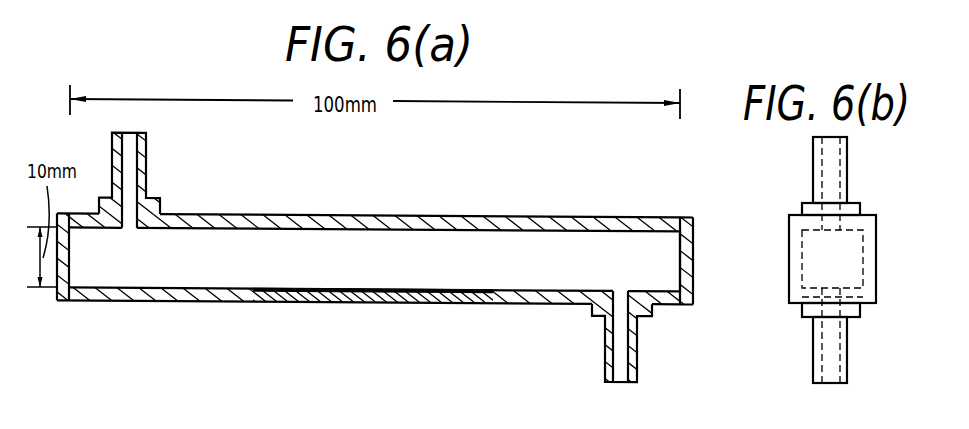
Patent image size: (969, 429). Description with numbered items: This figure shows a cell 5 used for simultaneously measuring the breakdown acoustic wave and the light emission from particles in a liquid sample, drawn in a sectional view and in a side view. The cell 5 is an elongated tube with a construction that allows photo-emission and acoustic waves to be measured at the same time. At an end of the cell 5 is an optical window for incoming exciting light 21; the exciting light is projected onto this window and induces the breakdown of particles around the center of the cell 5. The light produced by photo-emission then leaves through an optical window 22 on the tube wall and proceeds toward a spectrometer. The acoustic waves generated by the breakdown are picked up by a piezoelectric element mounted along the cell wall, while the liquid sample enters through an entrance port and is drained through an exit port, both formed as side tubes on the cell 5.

The cell 5 is at (484, 263).
The optical window for incoming exciting light 21 is at (60, 301).
The optical window 22 is at (343, 213).